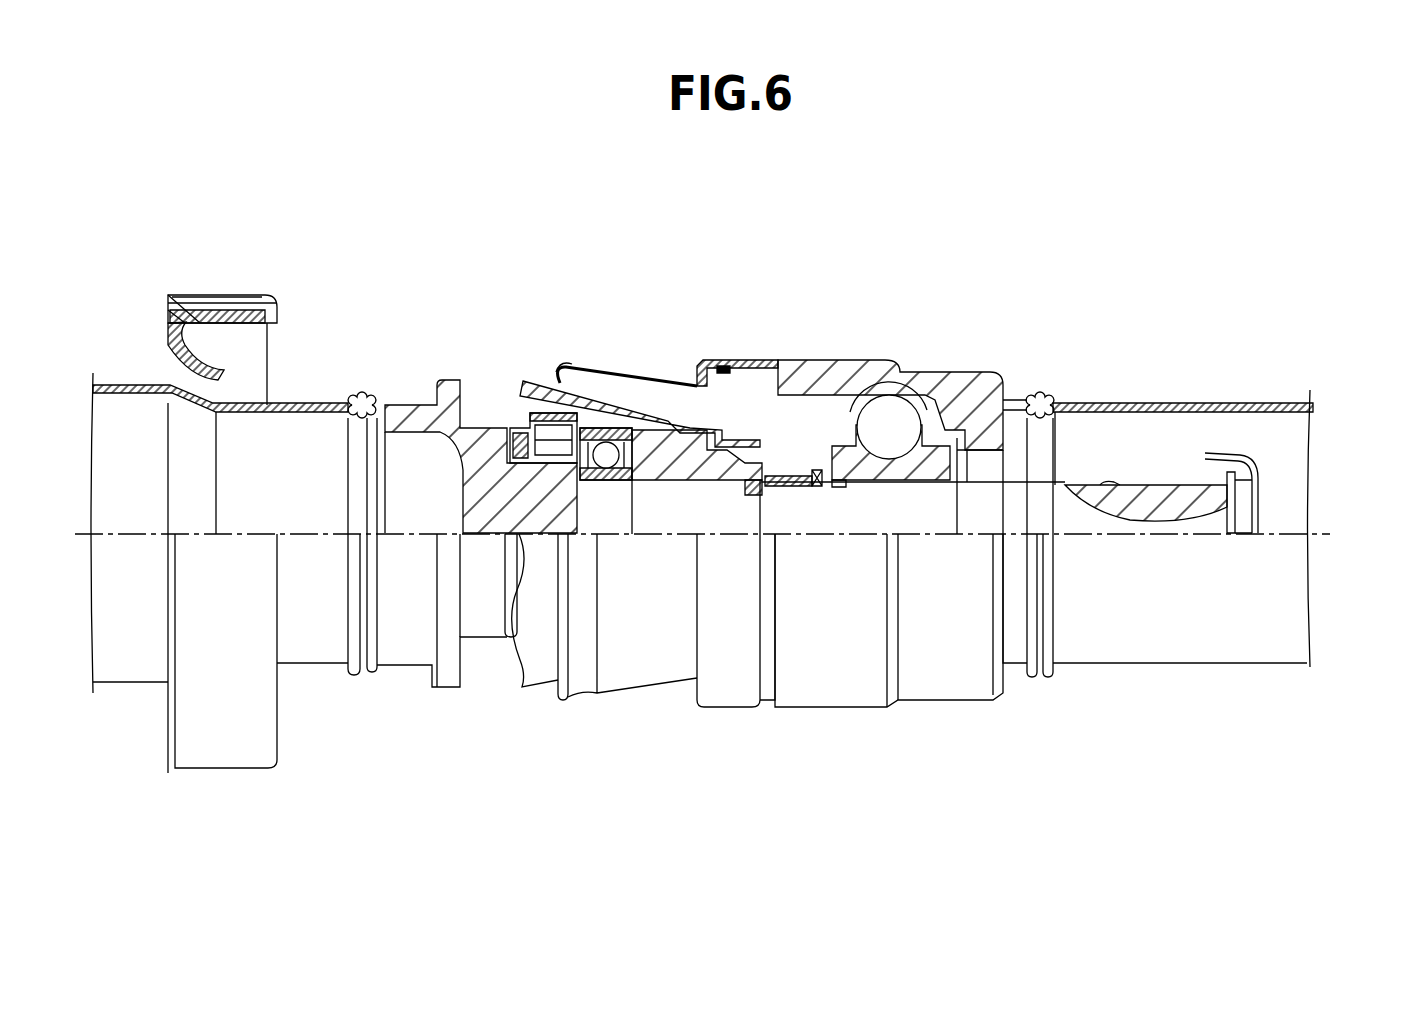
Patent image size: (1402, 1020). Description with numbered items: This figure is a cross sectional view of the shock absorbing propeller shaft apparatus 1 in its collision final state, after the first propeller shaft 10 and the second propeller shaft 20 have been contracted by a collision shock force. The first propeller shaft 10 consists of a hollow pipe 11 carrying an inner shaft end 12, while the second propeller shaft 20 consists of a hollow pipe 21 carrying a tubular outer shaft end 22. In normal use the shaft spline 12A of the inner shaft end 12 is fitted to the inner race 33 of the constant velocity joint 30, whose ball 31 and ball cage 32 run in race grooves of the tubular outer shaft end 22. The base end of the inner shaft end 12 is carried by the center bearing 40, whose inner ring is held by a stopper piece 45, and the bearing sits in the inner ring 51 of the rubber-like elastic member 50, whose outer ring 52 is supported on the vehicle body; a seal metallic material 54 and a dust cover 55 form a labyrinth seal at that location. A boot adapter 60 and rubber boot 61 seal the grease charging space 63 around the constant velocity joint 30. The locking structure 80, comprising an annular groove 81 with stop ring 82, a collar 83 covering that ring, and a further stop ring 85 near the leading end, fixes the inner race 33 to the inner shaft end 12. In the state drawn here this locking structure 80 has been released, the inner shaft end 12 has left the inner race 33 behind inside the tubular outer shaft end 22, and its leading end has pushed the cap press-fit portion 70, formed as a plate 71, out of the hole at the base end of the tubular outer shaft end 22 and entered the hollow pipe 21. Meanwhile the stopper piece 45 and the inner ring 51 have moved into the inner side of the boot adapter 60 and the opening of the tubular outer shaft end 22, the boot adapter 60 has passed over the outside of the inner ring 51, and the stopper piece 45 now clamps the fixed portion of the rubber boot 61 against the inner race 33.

The shock absorbing propeller shaft apparatus 1 is at (650, 244).
The first propeller shaft 10 is at (357, 395).
The hollow pipe 11 is at (300, 405).
The inner shaft end 12 is at (958, 510).
The shaft spline 12A is at (1160, 483).
The second propeller shaft 20 is at (1144, 398).
The hollow pipe 21 is at (1230, 403).
The tubular outer shaft end 22 is at (978, 365).
The constant velocity joint 30 is at (901, 390).
The ball 31 is at (868, 393).
The ball cage 32 is at (930, 395).
The inner race 33 is at (840, 487).
The center bearing 40 is at (607, 453).
The stopper piece 45 is at (737, 362).
The rubber-like elastic member 50 is at (178, 340).
The inner ring 51 is at (673, 378).
The outer ring 52 is at (240, 298).
The seal metallic material 54 is at (540, 457).
The dust cover 55 is at (500, 417).
The boot adapter 60 is at (602, 365).
The rubber boot 61 is at (748, 487).
The grease charging space 63 is at (711, 427).
The cap press-fit portion 70 is at (1268, 480).
The plate 71 is at (1260, 508).
The locking structure 80 is at (812, 496).
The annular groove 81 is at (1117, 483).
The stop ring 82 is at (766, 362).
The collar 83 is at (818, 473).
The stop ring 85 is at (1230, 483).